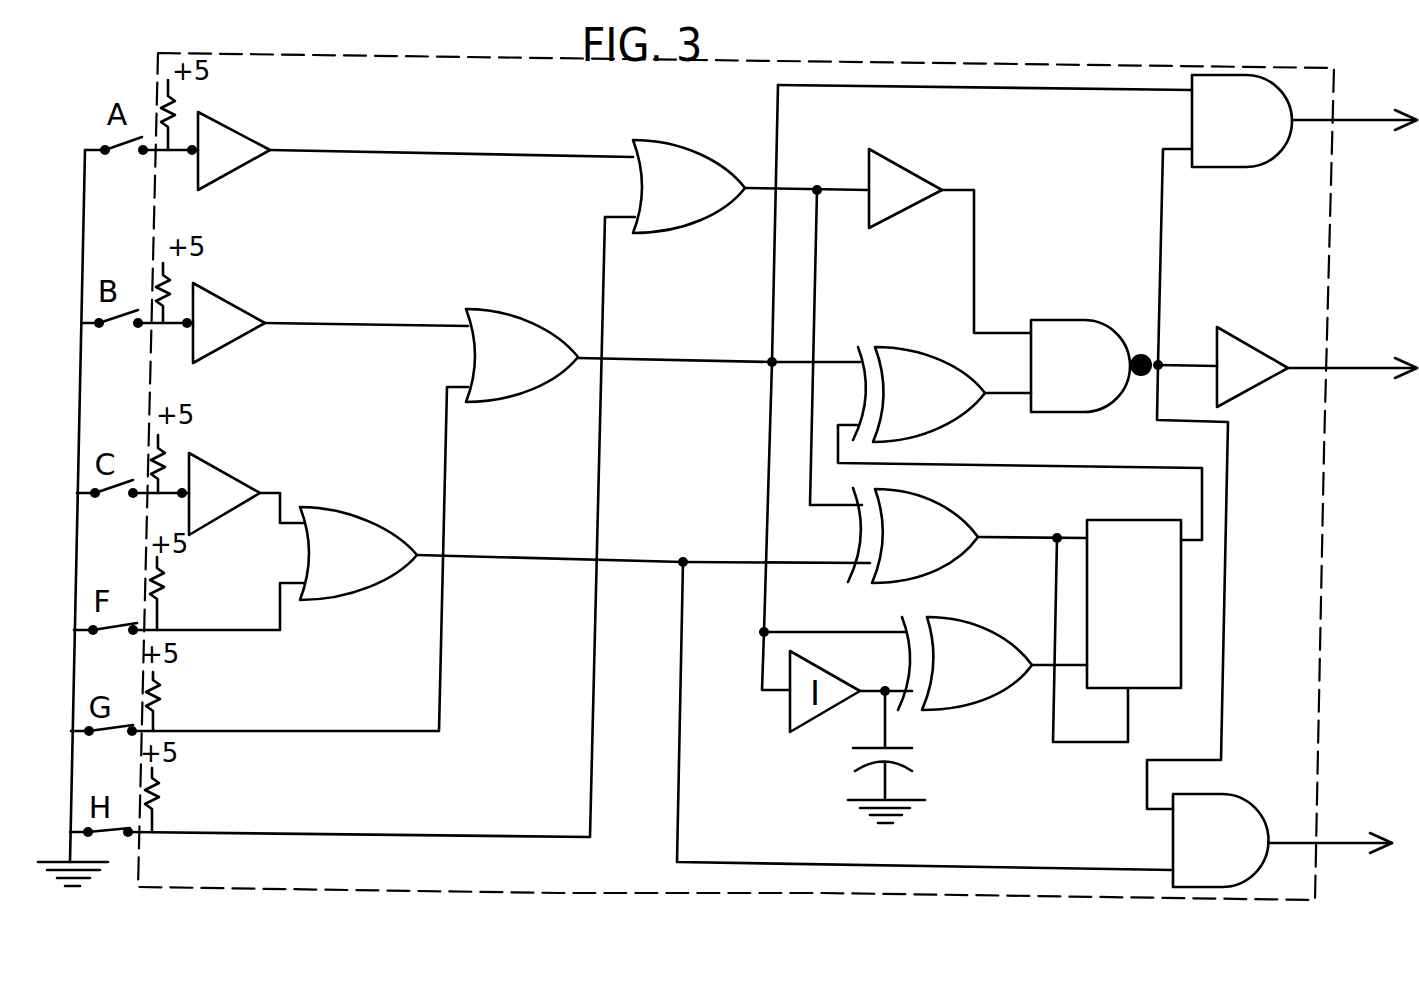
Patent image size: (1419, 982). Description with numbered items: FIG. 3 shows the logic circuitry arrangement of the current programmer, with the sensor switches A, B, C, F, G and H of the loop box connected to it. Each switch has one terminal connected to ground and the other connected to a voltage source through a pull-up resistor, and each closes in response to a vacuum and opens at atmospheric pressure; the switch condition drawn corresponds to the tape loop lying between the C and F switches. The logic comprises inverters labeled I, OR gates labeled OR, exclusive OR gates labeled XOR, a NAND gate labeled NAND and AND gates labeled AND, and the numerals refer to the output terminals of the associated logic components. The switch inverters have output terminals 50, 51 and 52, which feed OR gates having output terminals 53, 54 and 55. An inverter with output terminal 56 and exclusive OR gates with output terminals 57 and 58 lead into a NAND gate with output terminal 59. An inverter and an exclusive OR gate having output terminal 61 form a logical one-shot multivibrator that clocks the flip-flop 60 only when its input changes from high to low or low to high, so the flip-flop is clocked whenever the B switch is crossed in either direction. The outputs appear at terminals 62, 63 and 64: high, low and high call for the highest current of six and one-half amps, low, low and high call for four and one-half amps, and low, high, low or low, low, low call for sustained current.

The output terminal 50 is at (415, 151).
The output terminal 51 is at (330, 323).
The output terminal 52 is at (246, 494).
The output terminal 53 is at (759, 186).
The output terminal 54 is at (588, 350).
The output terminal 55 is at (585, 553).
The output terminal 56 is at (923, 188).
The output terminal 57 is at (942, 394).
The output terminal 58 is at (933, 535).
The output terminal 59 is at (1097, 371).
The flip-flop 60 is at (1153, 604).
The output terminal 61 is at (1035, 668).
The output terminal 62 is at (1304, 121).
The output terminal 63 is at (1317, 374).
The output terminal 64 is at (1282, 840).